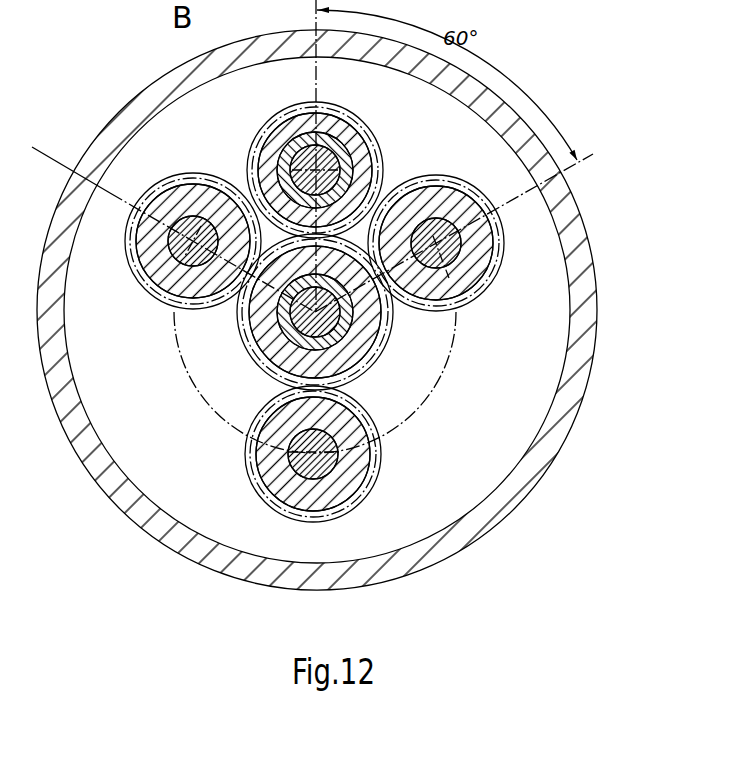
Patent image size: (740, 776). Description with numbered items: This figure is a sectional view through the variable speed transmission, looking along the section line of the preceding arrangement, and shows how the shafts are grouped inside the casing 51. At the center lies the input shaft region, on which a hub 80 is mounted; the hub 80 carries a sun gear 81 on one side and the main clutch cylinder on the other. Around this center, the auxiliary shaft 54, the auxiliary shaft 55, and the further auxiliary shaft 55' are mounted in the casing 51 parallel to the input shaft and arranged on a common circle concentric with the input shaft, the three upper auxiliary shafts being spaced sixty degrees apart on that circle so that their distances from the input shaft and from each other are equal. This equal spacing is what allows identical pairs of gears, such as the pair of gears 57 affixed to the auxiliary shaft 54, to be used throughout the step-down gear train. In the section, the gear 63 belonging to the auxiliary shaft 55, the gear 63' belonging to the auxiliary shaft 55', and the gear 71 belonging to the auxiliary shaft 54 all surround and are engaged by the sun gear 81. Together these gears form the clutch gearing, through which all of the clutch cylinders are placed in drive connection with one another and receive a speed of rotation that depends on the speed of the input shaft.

The casing 51 is at (576, 377).
The gear 63 is at (315, 158).
The auxiliary shaft 55 is at (347, 167).
The gear 63' is at (193, 225).
The auxiliary shaft 55' is at (175, 203).
The gear 71 is at (256, 483).
The auxiliary shaft 54 is at (327, 459).
The sun gear 81 is at (258, 372).
The hub 80 is at (283, 333).
The pair of gears 57 is at (330, 327).